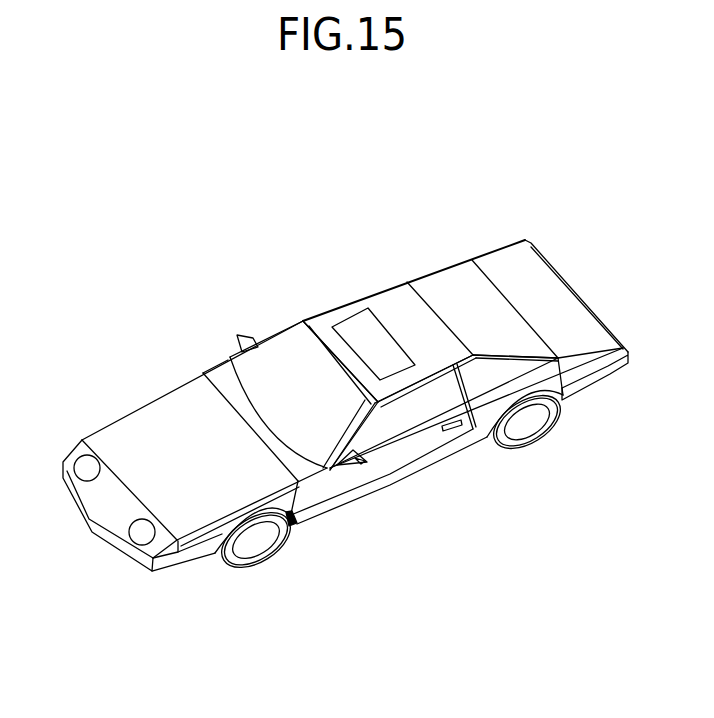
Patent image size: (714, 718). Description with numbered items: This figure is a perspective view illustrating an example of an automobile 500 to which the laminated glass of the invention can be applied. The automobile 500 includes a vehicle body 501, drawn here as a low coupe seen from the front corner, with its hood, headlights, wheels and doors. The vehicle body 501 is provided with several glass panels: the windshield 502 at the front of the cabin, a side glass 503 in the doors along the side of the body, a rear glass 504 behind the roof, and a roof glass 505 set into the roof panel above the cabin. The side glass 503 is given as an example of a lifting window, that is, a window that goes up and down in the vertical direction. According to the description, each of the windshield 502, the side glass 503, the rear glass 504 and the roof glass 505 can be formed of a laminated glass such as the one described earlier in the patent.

The automobile 500 is at (630, 133).
The vehicle body 501 is at (170, 372).
The windshield 502 is at (272, 357).
The side glass 503 is at (500, 380).
The rear glass 504 is at (448, 285).
The roof glass 505 is at (352, 327).